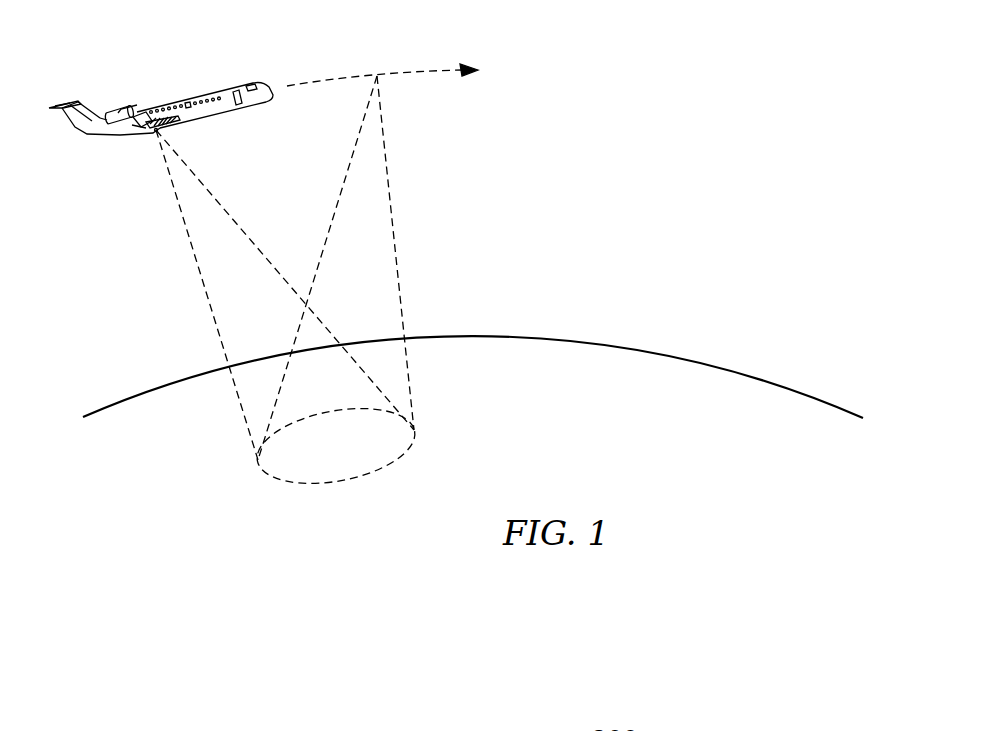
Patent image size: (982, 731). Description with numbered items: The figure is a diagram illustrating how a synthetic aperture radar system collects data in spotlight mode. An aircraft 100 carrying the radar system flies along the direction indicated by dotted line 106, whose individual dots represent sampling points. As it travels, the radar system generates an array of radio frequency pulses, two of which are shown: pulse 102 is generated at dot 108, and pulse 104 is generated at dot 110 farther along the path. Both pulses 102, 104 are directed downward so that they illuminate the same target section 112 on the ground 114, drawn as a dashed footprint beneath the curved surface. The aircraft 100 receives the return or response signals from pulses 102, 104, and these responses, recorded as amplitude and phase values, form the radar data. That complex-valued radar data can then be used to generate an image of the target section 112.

The aircraft 100 is at (200, 90).
The pulse 102 is at (198, 262).
The pulse 104 is at (394, 214).
The dotted line 106 is at (468, 63).
The dot 108 is at (157, 130).
The dot 110 is at (340, 79).
The target section 112 is at (322, 488).
The ground 114 is at (506, 412).